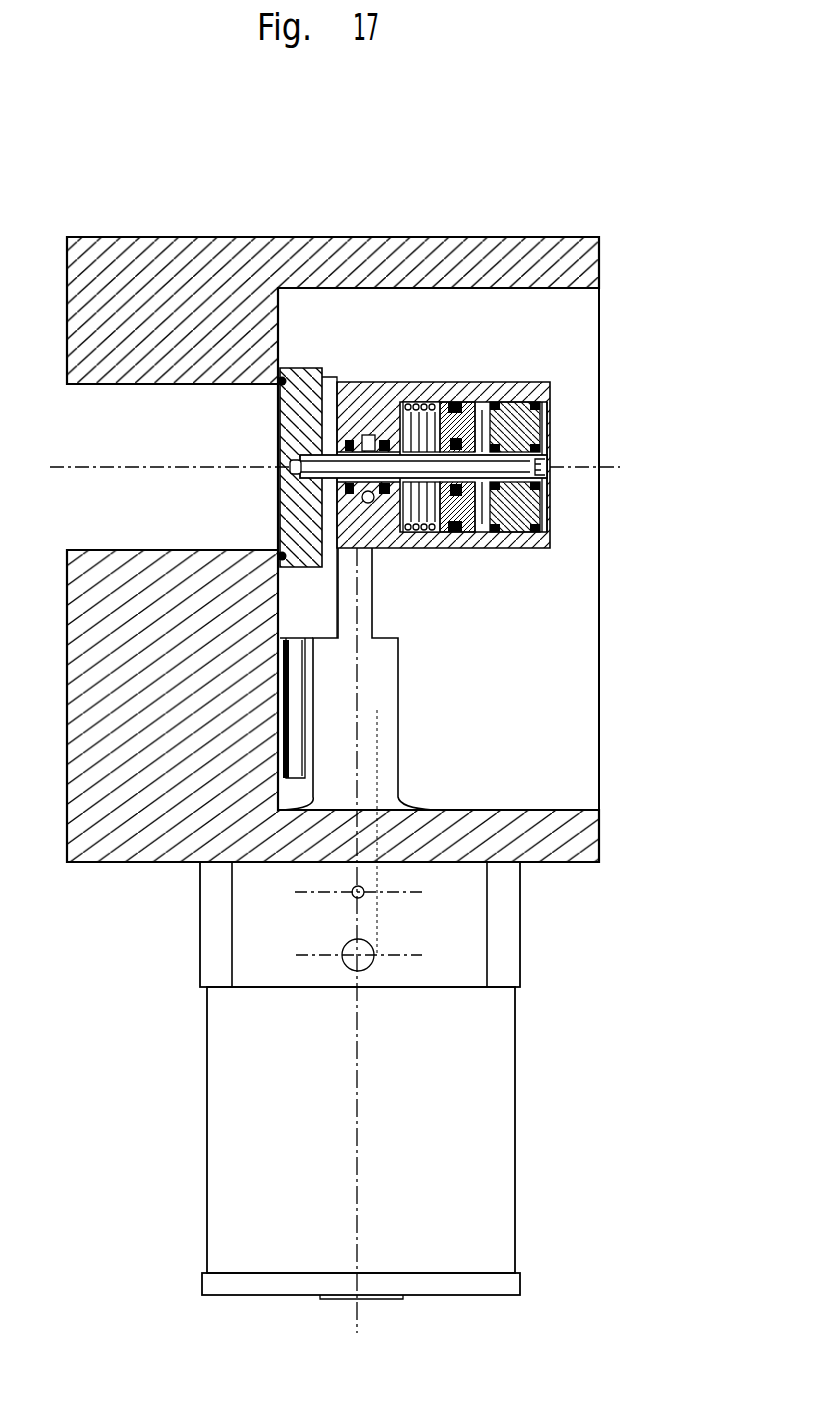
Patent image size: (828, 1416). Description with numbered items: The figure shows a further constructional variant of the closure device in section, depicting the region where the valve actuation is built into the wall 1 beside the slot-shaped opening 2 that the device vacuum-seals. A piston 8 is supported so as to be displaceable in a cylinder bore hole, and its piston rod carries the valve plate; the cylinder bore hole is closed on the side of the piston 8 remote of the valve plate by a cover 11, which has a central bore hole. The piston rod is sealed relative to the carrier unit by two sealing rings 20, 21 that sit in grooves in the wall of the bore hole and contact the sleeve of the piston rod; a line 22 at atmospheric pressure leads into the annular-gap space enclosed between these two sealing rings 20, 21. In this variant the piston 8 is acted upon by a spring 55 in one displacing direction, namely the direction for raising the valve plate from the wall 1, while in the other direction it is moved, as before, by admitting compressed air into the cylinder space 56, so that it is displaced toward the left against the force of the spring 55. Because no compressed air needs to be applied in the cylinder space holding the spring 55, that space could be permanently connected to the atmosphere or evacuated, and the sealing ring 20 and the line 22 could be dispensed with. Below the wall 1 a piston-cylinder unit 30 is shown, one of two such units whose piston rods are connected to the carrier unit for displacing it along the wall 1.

The wall 1 is at (132, 830).
The opening 2 is at (203, 415).
The piston 8 is at (488, 383).
The cover 11 is at (553, 518).
The sealing ring 20 is at (400, 395).
The sealing ring 21 is at (360, 383).
The line 22 is at (372, 500).
The piston-cylinder unit 30 is at (570, 1063).
The spring 55 is at (430, 535).
The cylinder space 56 is at (485, 522).